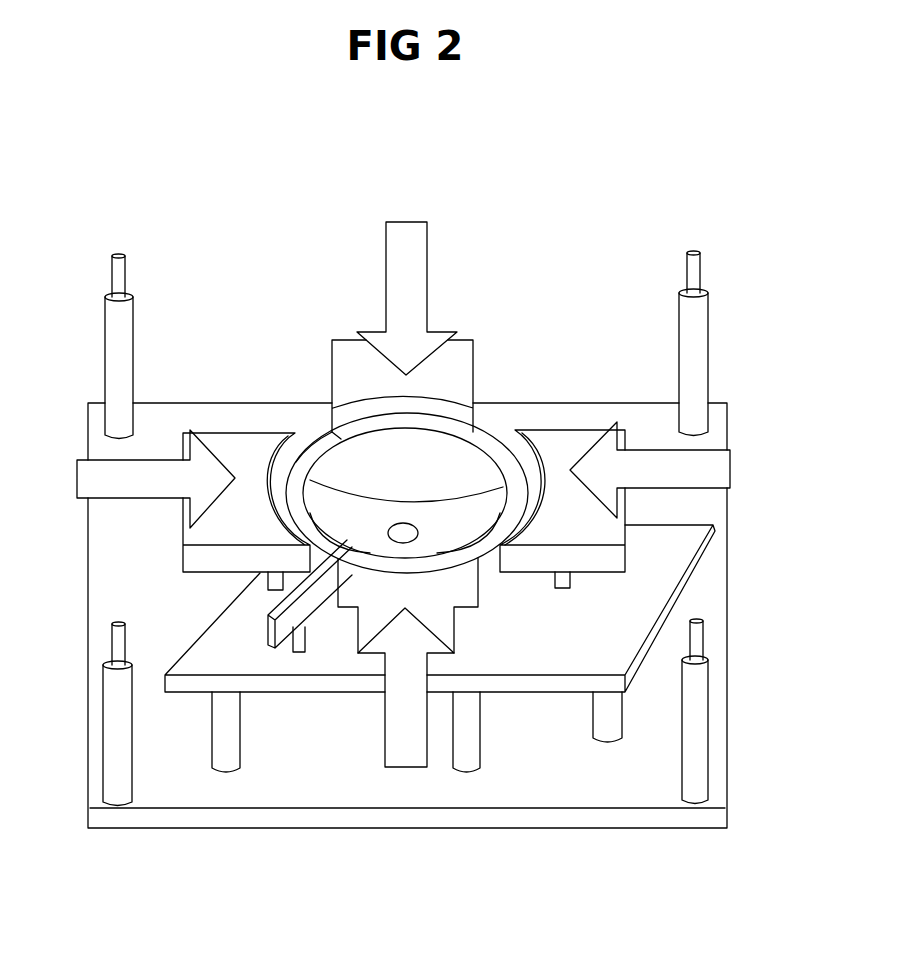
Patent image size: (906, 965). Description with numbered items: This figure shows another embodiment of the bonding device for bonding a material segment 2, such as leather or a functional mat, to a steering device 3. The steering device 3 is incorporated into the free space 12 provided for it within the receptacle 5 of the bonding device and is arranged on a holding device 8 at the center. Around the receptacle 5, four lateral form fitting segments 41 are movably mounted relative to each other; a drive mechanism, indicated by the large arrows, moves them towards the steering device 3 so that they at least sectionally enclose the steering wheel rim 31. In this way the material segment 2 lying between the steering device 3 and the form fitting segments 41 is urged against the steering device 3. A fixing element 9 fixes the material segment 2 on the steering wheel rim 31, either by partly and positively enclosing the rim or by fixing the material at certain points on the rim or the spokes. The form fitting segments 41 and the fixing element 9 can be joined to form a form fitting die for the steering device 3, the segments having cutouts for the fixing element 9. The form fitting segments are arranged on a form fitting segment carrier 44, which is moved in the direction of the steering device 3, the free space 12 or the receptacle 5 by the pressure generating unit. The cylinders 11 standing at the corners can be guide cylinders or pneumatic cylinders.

The material segment 2 is at (447, 430).
The steering device 3 is at (377, 528).
The receptacle 5 is at (465, 463).
The holding device 8 is at (405, 523).
The fixing element 9 is at (282, 628).
The cylinders 11 is at (125, 333).
The free space 12 is at (542, 470).
The steering wheel rim 31 is at (322, 448).
The lateral form fitting segments 41 is at (457, 353).
The form fitting segment carrier 44 is at (575, 653).